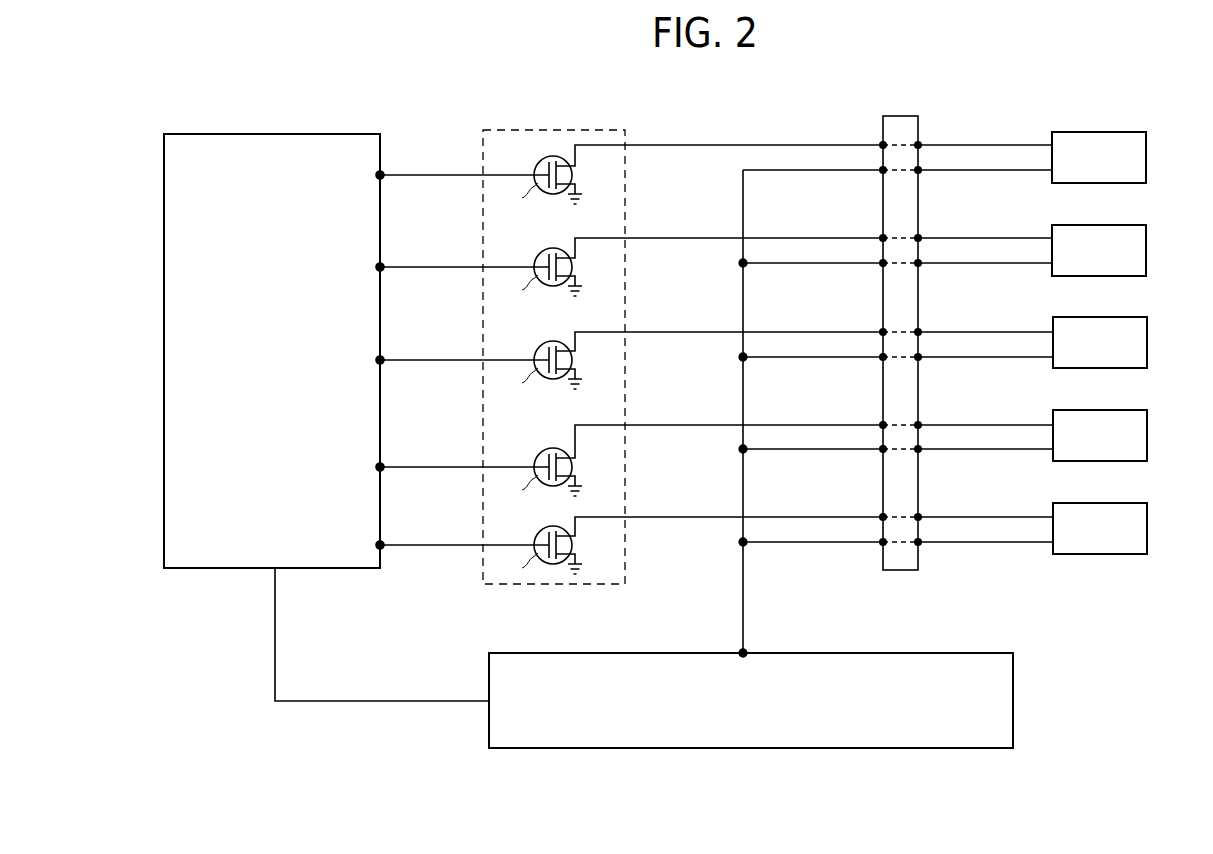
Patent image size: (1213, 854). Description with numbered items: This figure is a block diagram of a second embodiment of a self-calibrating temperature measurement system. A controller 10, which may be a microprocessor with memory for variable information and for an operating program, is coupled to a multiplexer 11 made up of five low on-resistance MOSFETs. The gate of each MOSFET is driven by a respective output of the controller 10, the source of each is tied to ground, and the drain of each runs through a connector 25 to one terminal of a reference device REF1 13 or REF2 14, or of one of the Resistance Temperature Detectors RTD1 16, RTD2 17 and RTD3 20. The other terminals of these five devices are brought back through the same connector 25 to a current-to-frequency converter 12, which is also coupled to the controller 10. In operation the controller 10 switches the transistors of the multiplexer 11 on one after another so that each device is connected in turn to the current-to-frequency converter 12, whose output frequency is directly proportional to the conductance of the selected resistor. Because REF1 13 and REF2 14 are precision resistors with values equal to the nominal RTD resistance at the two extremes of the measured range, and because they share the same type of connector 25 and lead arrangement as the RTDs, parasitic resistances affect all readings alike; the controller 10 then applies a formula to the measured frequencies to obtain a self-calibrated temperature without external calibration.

The controller 10 is at (292, 134).
The multiplexer 11 is at (575, 130).
The current-to-frequency converter 12 is at (1013, 702).
The reference device REF1 13 is at (1147, 151).
The reference device REF2 14 is at (1147, 247).
The Resistance Temperature Detector RTD1 16 is at (1147, 339).
The Resistance Temperature Detector RTD2 17 is at (1147, 432).
The Resistance Temperature Detector RTD3 20 is at (1147, 526).
The connector 25 is at (898, 116).